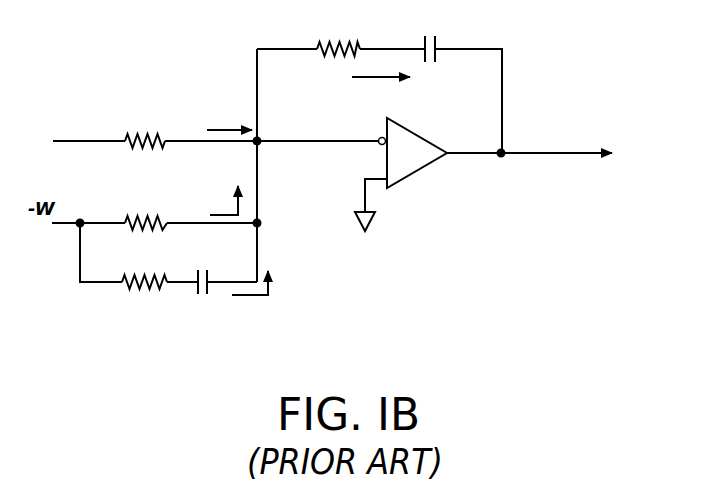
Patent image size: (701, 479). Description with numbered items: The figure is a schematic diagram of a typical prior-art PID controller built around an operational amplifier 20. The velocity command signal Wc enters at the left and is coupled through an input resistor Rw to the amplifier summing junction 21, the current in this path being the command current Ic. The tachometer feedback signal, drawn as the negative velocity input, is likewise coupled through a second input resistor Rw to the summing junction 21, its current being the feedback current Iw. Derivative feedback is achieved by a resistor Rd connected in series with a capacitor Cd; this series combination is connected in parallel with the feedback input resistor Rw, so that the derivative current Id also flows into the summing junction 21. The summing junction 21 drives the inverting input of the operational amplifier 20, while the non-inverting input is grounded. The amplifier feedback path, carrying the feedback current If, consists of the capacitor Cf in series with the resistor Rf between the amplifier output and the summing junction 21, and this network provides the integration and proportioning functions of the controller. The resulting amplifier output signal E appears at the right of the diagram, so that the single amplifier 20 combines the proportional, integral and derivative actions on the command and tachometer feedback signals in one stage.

The operational amplifier 20 is at (402, 177).
The amplifier summing junction 21 is at (258, 144).
The feedback resistor Rf is at (338, 33).
The feedback capacitor Cf is at (425, 36).
The input resistor Rw is at (146, 164).
The derivative resistor Rd is at (144, 299).
The derivative capacitor Cd is at (193, 297).
The command current Ic is at (229, 115).
The tachometer feedback current Iw is at (218, 199).
The derivative feedback current Id is at (250, 299).
The amplifier feedback current If is at (381, 91).
The velocity command signal Wc is at (81, 127).
The amplifier output signal E is at (529, 138).